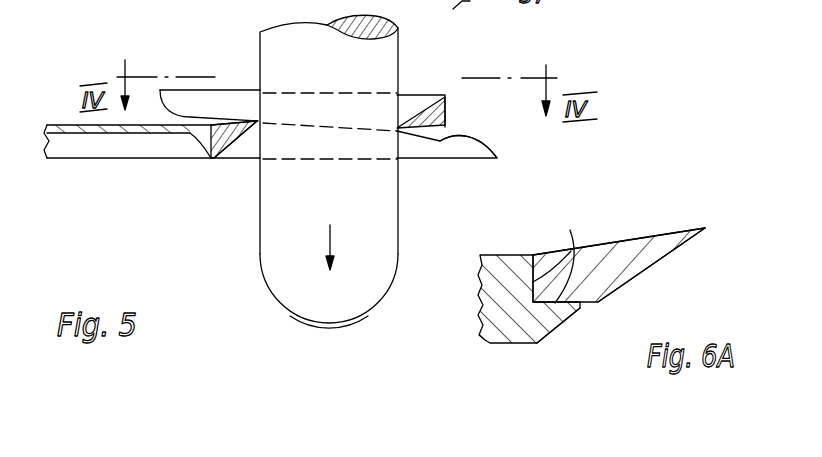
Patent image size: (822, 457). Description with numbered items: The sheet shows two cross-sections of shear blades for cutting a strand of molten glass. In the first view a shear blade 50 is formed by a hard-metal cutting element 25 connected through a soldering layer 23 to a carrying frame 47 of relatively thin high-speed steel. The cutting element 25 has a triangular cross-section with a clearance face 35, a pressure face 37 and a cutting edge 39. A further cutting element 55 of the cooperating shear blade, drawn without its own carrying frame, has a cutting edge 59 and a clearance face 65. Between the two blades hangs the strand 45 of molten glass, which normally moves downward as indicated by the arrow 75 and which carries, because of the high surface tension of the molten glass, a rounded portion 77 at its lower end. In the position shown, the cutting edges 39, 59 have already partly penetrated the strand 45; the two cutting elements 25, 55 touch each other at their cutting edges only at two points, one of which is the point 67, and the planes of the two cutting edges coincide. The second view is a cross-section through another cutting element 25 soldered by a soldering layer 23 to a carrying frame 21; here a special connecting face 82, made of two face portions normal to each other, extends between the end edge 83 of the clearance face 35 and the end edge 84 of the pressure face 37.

In FIG. 6A, the carrying frame 21 is at (470, 310).
In FIG. 5, the soldering layer 23 is at (218, 161).
In FIG. 5, the cutting element 25 is at (239, 150).
In FIG. 6A, the cutting element 25 is at (647, 230).
In FIG. 5, the clearance face 35 is at (216, 124).
In FIG. 6A, the clearance face 35 is at (603, 242).
In FIG. 6A, the pressure face 37 is at (641, 273).
In FIG. 5, the cutting edge 39 is at (492, 142).
In FIG. 5, the strand 45 is at (403, 214).
In FIG. 5, the carrying frame 47 is at (86, 164).
In FIG. 5, the shear blade 50 is at (57, 105).
In FIG. 5, the further cutting element 55 is at (426, 90).
In FIG. 5, the cutting edge 59 is at (184, 117).
In FIG. 5, the clearance face 65 is at (440, 143).
In FIG. 5, the point 67 is at (331, 127).
In FIG. 5, the arrow 75 is at (332, 233).
In FIG. 5, the rounded portion 77 is at (345, 324).
In FIG. 6A, the connecting face 82 is at (569, 232).
In FIG. 6A, the end edge 83 is at (533, 254).
In FIG. 6A, the end edge 84 is at (596, 308).